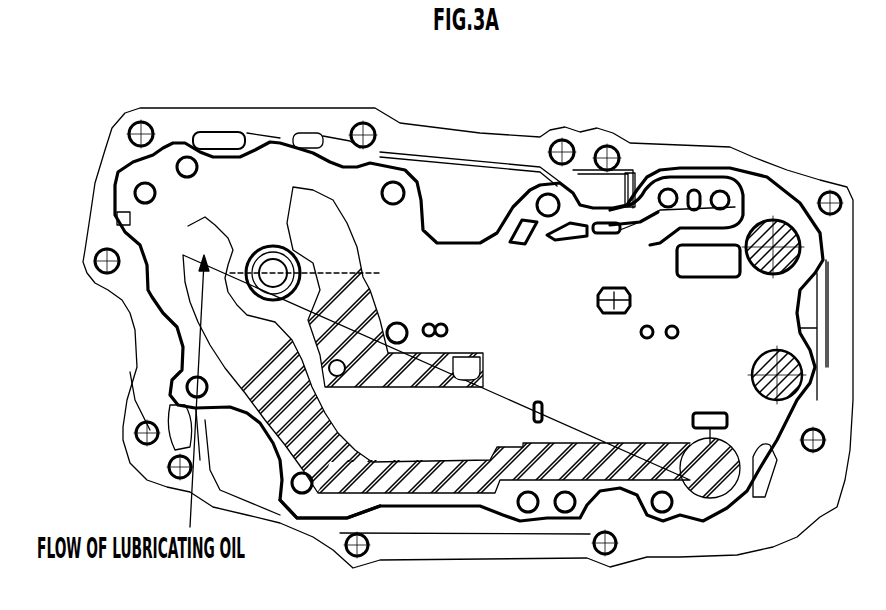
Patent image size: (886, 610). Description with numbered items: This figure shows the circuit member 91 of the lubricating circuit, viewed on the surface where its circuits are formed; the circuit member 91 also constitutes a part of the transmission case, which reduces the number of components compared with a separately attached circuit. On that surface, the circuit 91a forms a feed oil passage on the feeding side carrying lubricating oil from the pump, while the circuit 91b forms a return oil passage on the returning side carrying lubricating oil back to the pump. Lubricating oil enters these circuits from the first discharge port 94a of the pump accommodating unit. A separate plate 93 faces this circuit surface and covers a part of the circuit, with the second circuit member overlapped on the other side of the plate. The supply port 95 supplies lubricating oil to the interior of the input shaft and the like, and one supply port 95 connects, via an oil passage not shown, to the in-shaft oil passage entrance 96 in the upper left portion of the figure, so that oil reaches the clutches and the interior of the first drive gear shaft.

The circuit member 91 is at (185, 88).
The circuit 91a is at (435, 375).
The circuit 91b is at (312, 528).
The separate plate 93 is at (570, 297).
The first discharge port 94a is at (343, 287).
The supply port 95 is at (773, 228).
The in-shaft oil passage entrance 96 is at (267, 250).